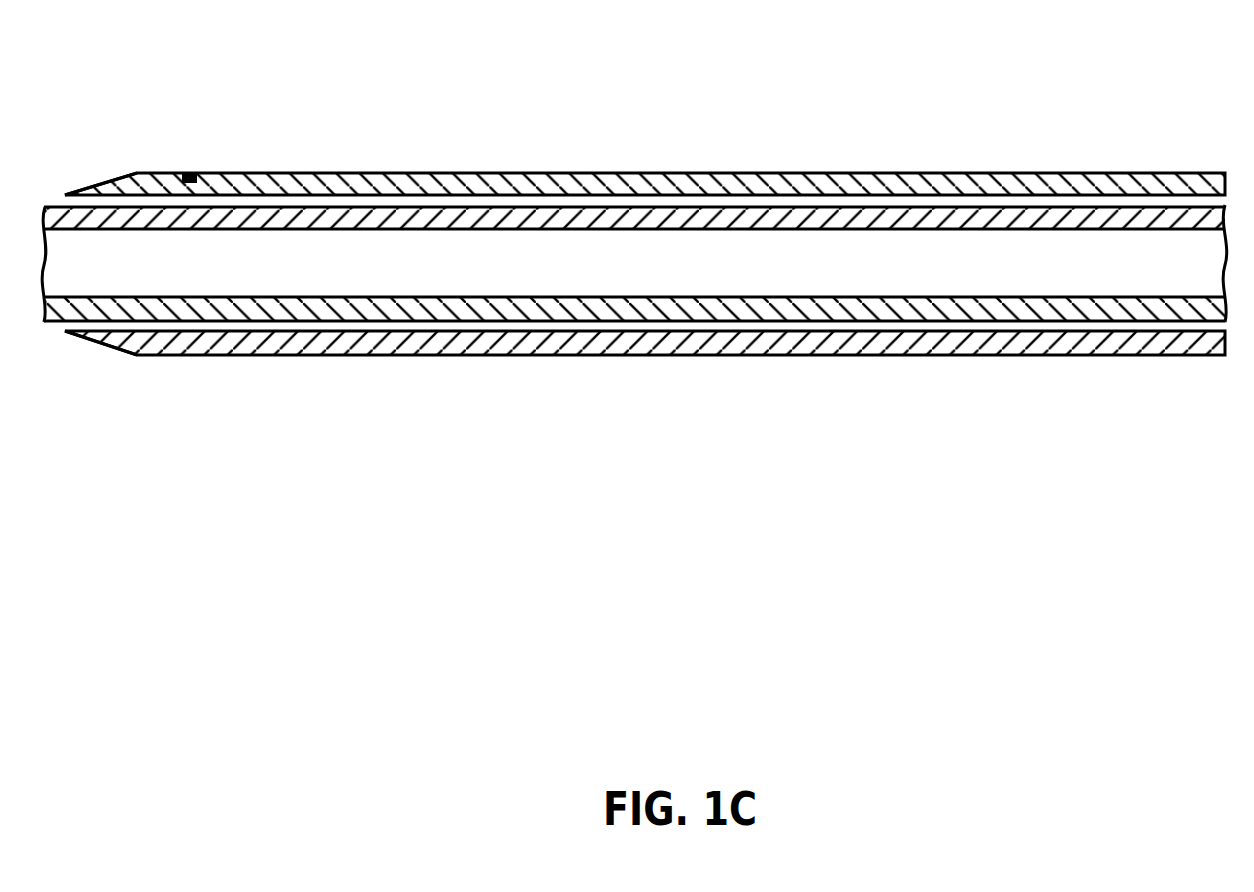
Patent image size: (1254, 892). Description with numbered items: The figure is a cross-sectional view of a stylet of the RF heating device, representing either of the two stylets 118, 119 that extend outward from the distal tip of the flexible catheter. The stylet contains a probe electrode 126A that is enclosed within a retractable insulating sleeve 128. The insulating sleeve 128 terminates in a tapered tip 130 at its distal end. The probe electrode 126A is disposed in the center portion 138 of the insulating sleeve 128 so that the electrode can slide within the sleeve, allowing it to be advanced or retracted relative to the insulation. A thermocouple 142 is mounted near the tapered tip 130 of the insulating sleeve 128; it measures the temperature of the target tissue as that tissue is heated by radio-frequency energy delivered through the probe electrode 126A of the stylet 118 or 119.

The stylet 118 is at (1047, 405).
The stylet 119 is at (989, 137).
The probe electrode 126A is at (407, 220).
The retractable insulating sleeve 128 is at (315, 183).
The tapered tip 130 is at (93, 178).
The center portion 138 is at (777, 200).
The thermocouple 142 is at (182, 172).